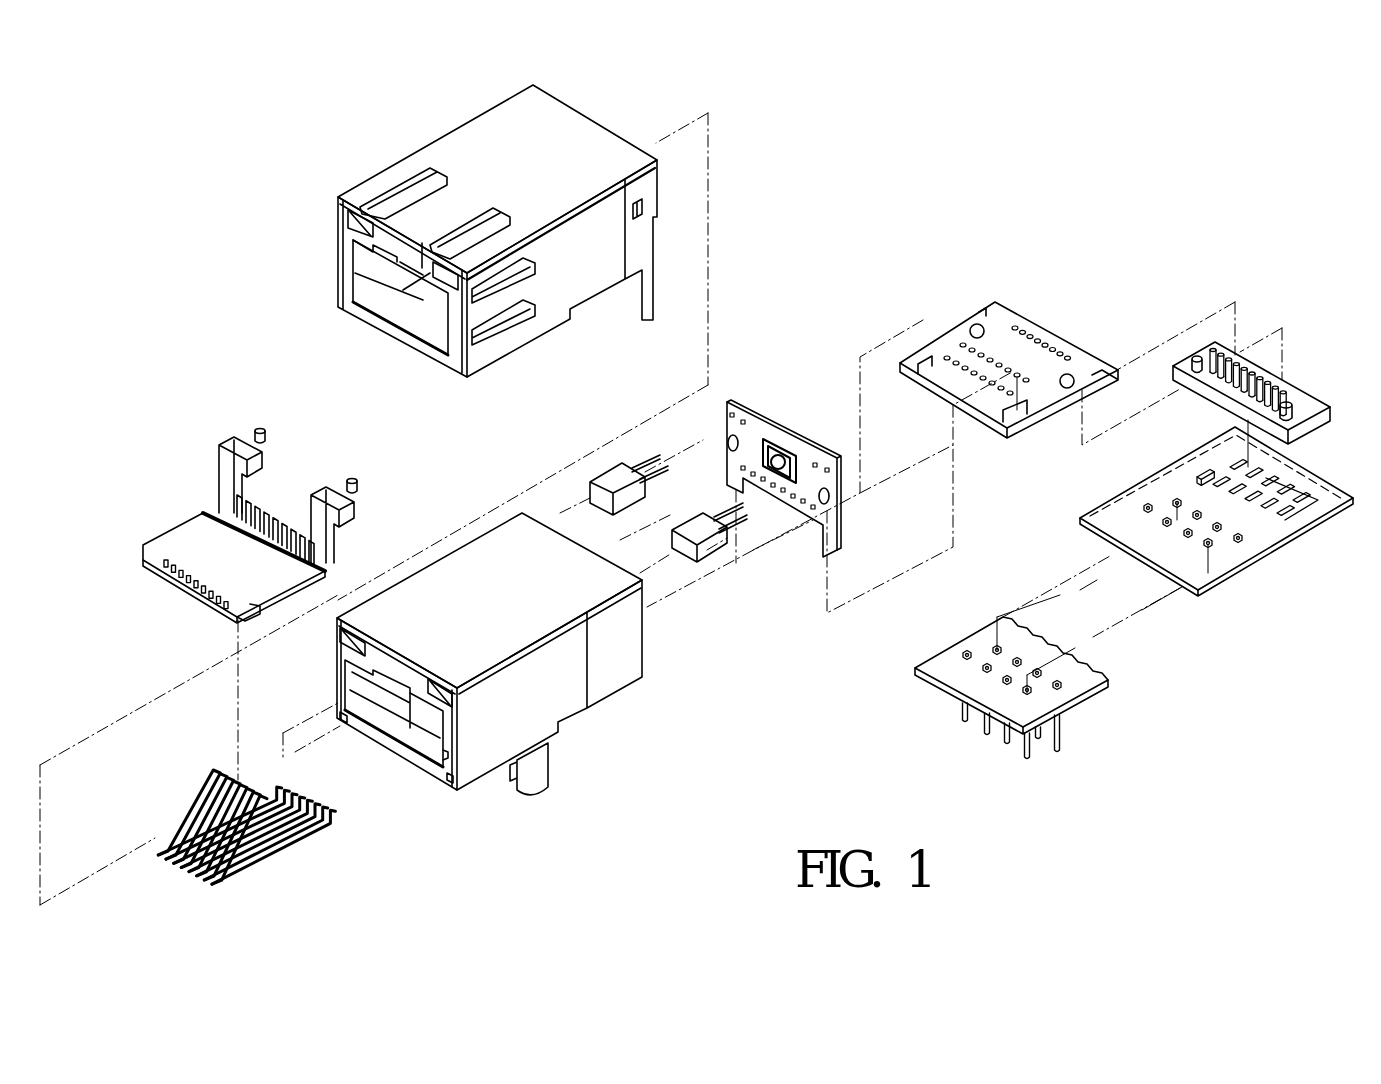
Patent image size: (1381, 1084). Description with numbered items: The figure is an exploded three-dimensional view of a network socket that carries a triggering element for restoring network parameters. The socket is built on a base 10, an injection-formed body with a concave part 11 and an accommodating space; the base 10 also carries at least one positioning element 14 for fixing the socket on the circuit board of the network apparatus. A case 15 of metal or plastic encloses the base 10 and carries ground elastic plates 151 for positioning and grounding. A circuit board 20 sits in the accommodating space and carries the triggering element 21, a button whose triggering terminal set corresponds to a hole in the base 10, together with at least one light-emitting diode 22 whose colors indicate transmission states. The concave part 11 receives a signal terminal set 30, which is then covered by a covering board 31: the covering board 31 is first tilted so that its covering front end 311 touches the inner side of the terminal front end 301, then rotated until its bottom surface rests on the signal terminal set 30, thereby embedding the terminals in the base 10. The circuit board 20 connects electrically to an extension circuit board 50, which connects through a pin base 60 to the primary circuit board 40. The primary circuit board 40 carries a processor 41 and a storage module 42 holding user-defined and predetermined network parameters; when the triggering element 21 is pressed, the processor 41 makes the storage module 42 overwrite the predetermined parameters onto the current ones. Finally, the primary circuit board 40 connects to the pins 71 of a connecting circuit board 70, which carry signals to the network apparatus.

The base 10 is at (503, 694).
The concave part 11 is at (428, 750).
The positioning element 14 is at (537, 773).
The case 15 is at (490, 234).
The ground elastic plate 151 is at (400, 187).
The circuit board 20 is at (815, 475).
The triggering element 21 is at (768, 437).
The light-emitting diode 22 is at (608, 479).
The signal terminal set 30 is at (226, 853).
The terminal front end 301 is at (182, 867).
The covering board 31 is at (236, 530).
The covering front end 311 is at (172, 583).
The primary circuit board 40 is at (1226, 510).
The processor 41 is at (1317, 518).
The storage module 42 is at (1190, 462).
The extension circuit board 50 is at (955, 338).
The pin base 60 is at (1290, 380).
The connecting circuit board 70 is at (1006, 714).
The pins 71 is at (1033, 752).